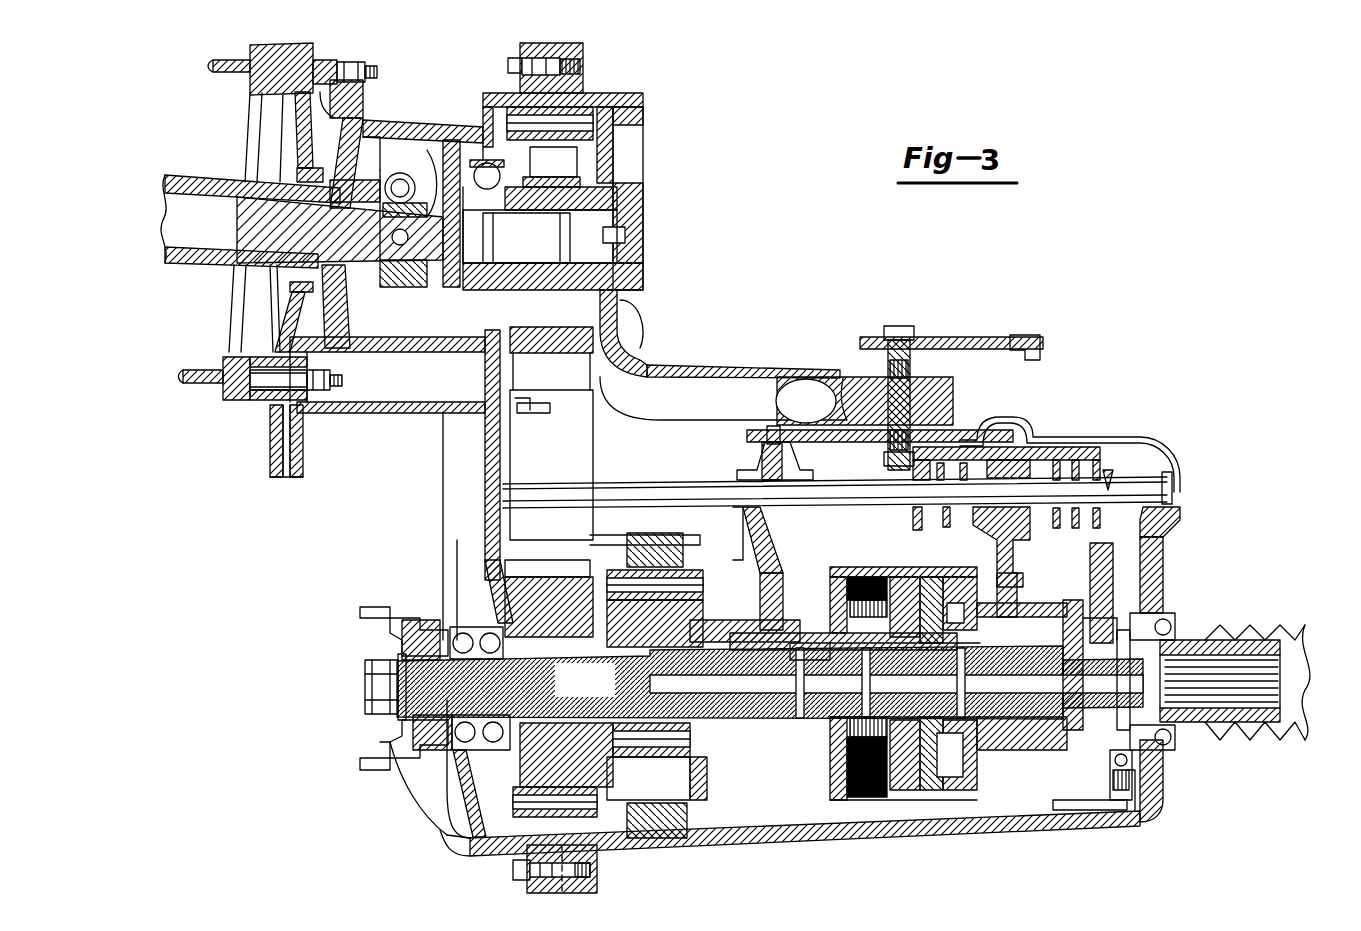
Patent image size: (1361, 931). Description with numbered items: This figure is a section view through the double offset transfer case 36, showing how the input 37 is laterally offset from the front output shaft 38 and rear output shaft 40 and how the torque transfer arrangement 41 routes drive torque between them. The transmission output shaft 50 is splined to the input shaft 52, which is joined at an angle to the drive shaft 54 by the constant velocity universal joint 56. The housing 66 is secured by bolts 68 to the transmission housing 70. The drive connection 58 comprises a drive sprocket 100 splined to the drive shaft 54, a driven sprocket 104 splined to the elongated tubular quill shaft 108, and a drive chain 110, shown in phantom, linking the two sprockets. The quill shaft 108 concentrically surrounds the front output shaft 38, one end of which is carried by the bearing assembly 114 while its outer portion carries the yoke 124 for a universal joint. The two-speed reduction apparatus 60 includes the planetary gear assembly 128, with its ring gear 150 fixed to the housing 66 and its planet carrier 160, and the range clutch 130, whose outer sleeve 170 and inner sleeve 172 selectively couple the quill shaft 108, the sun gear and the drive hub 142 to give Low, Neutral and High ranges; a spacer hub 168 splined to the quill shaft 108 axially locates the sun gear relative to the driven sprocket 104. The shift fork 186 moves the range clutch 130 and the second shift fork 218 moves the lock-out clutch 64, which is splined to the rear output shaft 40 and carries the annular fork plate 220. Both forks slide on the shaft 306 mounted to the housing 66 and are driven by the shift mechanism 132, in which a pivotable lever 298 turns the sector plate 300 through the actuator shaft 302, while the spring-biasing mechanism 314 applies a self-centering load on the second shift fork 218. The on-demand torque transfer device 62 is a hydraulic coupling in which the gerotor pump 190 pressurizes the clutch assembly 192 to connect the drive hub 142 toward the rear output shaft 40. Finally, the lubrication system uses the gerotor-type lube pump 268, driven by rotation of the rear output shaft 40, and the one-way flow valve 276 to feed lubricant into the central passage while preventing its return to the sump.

The transfer case 36 is at (770, 155).
The input 37 is at (412, 122).
The front output shaft 38 is at (398, 760).
The rear output shaft 40 is at (1195, 630).
The torque transfer arrangement 41 is at (700, 400).
The transmission output shaft 50 is at (212, 172).
The input shaft 52 is at (232, 278).
The drive shaft 54 is at (618, 220).
The constant velocity universal joint 56 is at (432, 180).
The drive connection 58 is at (606, 368).
The two-speed reduction apparatus 60 is at (672, 842).
The on-demand torque transfer device 62 is at (910, 800).
The lock-out clutch 64 is at (1078, 615).
The housing 66 is at (388, 418).
The bolts 68 is at (367, 80).
The transmission housing 70 is at (235, 418).
The drive sprocket 100 is at (598, 152).
The driven sprocket 104 is at (530, 610).
The quill shaft 108 is at (770, 866).
The drive chain 110 is at (548, 548).
The bearing assembly 114 is at (455, 760).
The yoke 124 is at (356, 615).
The planetary gear assembly 128 is at (716, 525).
The range clutch 130 is at (800, 595).
The shift mechanism 132 is at (1148, 318).
The drive hub 142 is at (848, 765).
The ring gear 150 is at (527, 843).
The planet carrier 160 is at (513, 800).
The spacer hub 168 is at (560, 565).
The outer sleeve 170 is at (765, 602).
The inner sleeve 172 is at (712, 800).
The shift fork 186 is at (785, 520).
The gerotor pump 190 is at (932, 790).
The clutch assembly 192 is at (842, 800).
The second shift fork 218 is at (1025, 530).
The fork plate 220 is at (1062, 800).
The lube pump 268 is at (1150, 610).
The one-way flow valve 276 is at (1130, 782).
The pivotable lever 298 is at (950, 337).
The sector plate 300 is at (797, 430).
The actuator shaft 302 is at (905, 374).
The shaft 306 is at (658, 460).
The spring-biasing mechanism 314 is at (1110, 458).